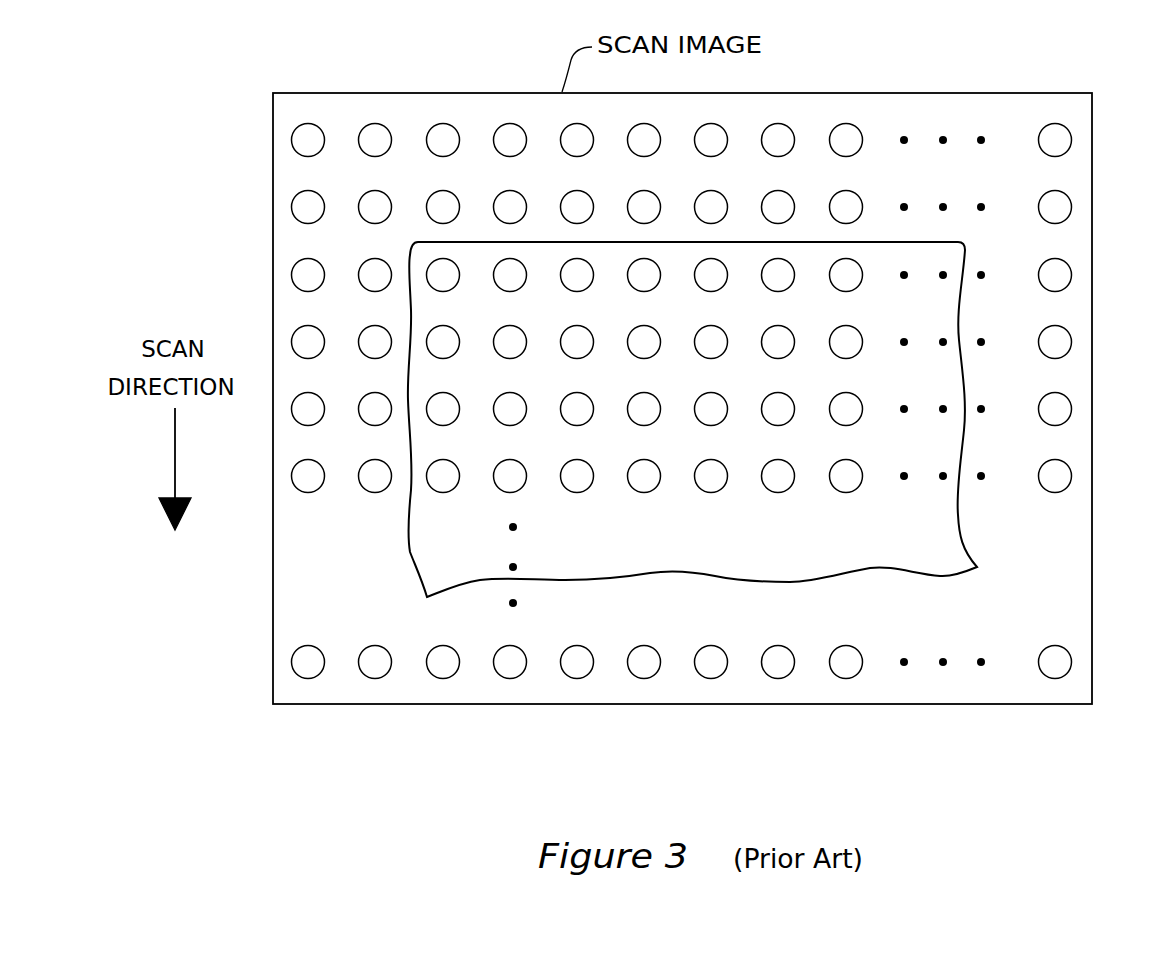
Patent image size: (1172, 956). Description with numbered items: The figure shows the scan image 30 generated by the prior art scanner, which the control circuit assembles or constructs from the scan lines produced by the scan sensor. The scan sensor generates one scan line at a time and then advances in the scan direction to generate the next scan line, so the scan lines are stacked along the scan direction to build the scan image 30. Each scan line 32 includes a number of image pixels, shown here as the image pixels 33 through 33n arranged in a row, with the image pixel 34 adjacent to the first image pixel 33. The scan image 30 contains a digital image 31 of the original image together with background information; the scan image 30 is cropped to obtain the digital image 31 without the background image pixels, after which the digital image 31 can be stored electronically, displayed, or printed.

The scan image 30 is at (867, 92).
The digital image 31 is at (410, 552).
The scan line of pixels 32 is at (308, 678).
The image pixel 33 is at (307, 122).
The second pixel 34 is at (376, 123).
The image pixel 33n is at (1060, 123).